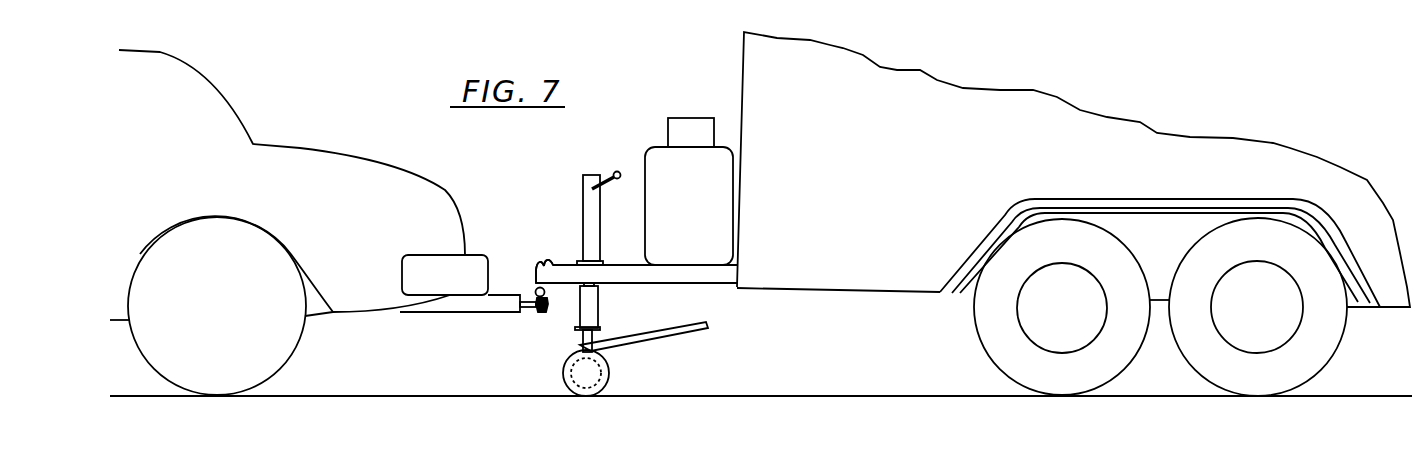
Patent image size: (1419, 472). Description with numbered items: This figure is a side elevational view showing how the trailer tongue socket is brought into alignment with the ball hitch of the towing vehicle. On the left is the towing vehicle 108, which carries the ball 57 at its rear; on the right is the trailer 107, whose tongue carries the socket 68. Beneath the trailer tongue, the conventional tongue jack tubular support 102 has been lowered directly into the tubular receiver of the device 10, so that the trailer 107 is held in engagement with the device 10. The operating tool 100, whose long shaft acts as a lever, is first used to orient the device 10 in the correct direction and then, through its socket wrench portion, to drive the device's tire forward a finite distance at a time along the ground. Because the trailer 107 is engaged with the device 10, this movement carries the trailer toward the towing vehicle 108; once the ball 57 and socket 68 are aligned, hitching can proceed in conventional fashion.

The device 10 is at (556, 356).
The ball 57 is at (537, 289).
The socket 68 is at (540, 262).
The operating tool 100 is at (654, 343).
The tongue jack tubular support 102 is at (596, 287).
The trailer 107 is at (873, 172).
The towing vehicle 108 is at (368, 238).